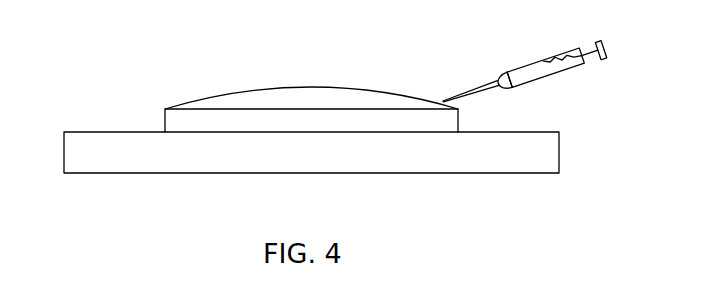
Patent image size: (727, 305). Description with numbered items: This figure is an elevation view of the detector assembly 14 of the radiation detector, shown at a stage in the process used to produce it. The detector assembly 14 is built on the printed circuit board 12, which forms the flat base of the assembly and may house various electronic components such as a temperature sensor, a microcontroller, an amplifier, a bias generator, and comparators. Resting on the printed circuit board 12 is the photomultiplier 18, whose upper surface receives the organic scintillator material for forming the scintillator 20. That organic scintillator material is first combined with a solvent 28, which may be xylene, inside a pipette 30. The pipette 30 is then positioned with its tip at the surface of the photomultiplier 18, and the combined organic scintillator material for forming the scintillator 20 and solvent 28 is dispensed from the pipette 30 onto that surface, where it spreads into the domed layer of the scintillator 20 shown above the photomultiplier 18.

The printed circuit board 12 is at (561, 153).
The detector assembly 14 is at (115, 62).
The photomultiplier 18 is at (165, 127).
The scintillator 20 is at (222, 102).
The solvent 28 is at (397, 102).
The pipette 30 is at (572, 65).